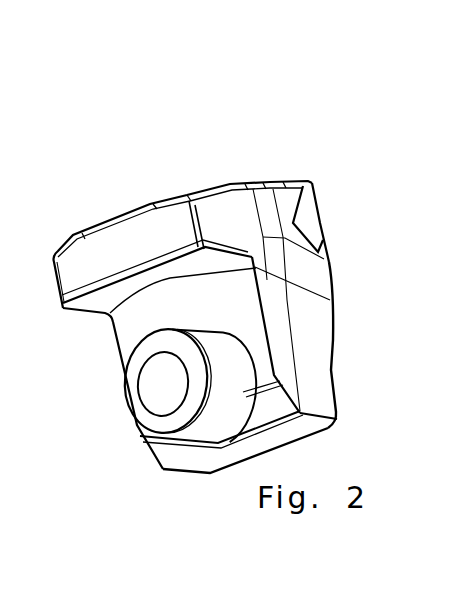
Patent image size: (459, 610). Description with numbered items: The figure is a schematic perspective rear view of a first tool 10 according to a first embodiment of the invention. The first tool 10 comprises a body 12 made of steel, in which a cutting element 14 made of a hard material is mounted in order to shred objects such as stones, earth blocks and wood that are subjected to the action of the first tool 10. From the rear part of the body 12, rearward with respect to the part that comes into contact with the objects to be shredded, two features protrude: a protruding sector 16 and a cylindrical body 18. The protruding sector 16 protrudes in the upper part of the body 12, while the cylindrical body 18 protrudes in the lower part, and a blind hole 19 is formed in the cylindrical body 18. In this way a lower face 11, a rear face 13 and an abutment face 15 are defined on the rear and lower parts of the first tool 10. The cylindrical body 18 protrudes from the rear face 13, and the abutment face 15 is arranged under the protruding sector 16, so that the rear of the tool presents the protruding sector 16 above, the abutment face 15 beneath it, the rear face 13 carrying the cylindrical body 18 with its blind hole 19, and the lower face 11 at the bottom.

The first tool 10 is at (158, 142).
The lower face 11 is at (252, 449).
The body 12 is at (313, 358).
The rear face 13 is at (237, 302).
The cutting element 14 is at (308, 213).
The abutment face 15 is at (137, 292).
The protruding sector 16 is at (105, 252).
The cylindrical body 18 is at (210, 418).
The blind hole 19 is at (158, 385).